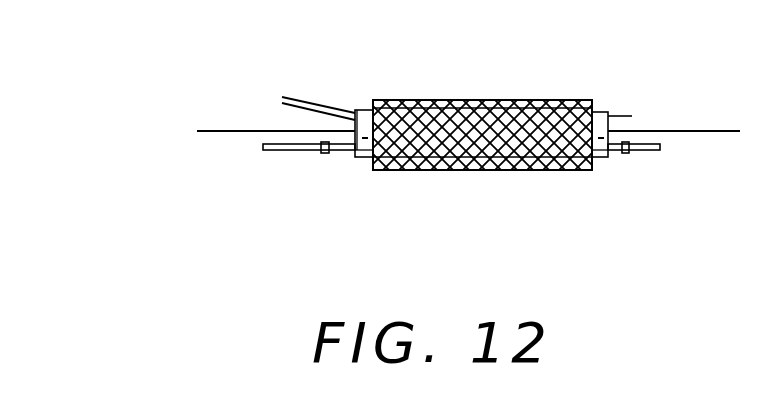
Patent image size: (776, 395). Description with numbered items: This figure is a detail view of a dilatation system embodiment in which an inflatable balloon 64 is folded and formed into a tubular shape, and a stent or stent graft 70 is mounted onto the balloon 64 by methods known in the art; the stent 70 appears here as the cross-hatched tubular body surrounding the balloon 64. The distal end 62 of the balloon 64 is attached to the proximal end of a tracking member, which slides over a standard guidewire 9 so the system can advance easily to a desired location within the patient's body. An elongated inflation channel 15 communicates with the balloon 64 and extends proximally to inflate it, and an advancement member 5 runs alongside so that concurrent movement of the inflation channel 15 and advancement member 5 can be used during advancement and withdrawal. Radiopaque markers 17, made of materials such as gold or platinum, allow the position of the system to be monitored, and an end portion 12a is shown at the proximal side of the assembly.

The advancement member 5 is at (287, 151).
The guidewire 9 is at (217, 131).
The end cap 12a is at (364, 110).
The inflation channel 15 is at (308, 100).
The radiopaque markers 17 is at (328, 155).
The distal end of inflatable balloon 62 is at (602, 113).
The inflatable balloon 64 is at (487, 123).
The stent or stent graft 70 is at (445, 170).